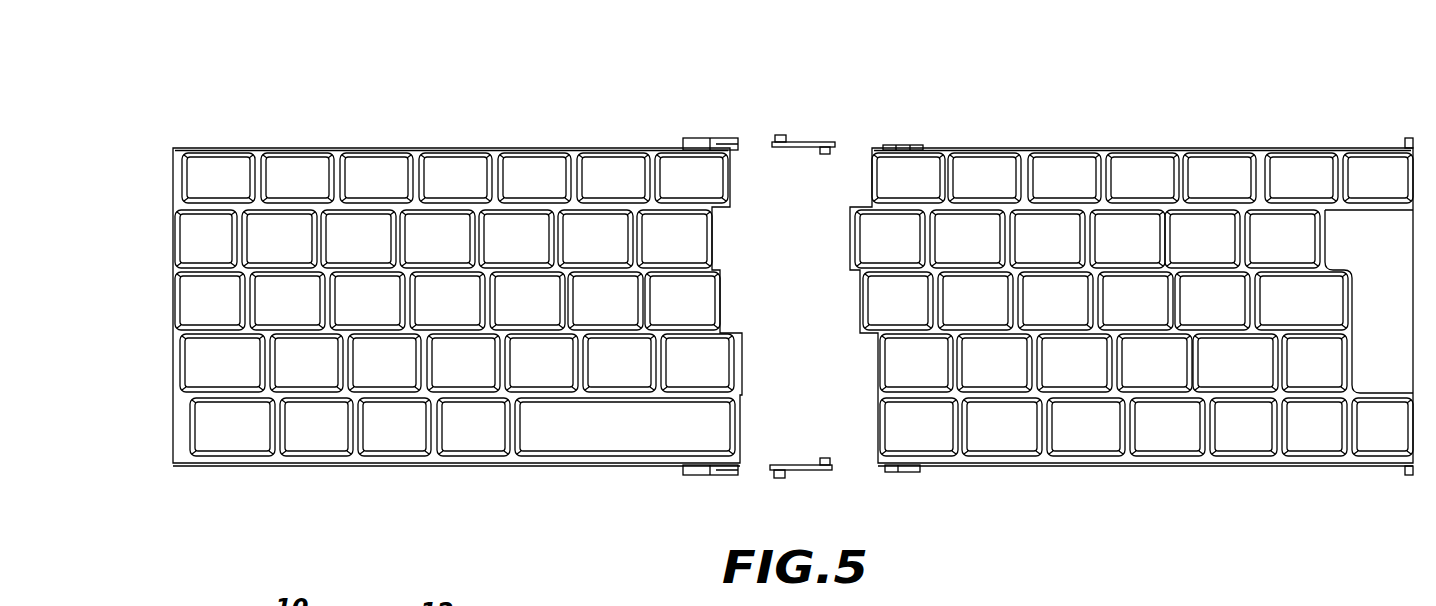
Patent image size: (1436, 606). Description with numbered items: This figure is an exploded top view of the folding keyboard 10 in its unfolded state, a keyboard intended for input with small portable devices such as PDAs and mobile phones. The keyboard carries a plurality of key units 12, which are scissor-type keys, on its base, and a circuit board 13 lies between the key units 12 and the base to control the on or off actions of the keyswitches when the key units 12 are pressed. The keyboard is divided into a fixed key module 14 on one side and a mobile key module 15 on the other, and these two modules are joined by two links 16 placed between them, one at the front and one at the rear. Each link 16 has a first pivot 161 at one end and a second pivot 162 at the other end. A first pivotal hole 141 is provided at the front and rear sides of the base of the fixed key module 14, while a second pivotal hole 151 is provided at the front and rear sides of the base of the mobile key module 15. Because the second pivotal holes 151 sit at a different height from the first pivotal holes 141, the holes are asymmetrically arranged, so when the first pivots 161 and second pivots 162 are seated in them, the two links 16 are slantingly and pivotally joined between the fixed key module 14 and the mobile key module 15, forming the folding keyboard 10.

The folding keyboard 10 is at (313, 123).
The key unit 12 is at (393, 160).
The circuit board 13 is at (185, 151).
The fixed key module 14 is at (280, 468).
The first pivotal hole 141 is at (718, 137).
The mobile key module 15 is at (1240, 470).
The second pivotal hole 151 is at (906, 147).
The link 16 is at (797, 142).
The first pivot 161 is at (781, 135).
The second pivot 162 is at (826, 147).